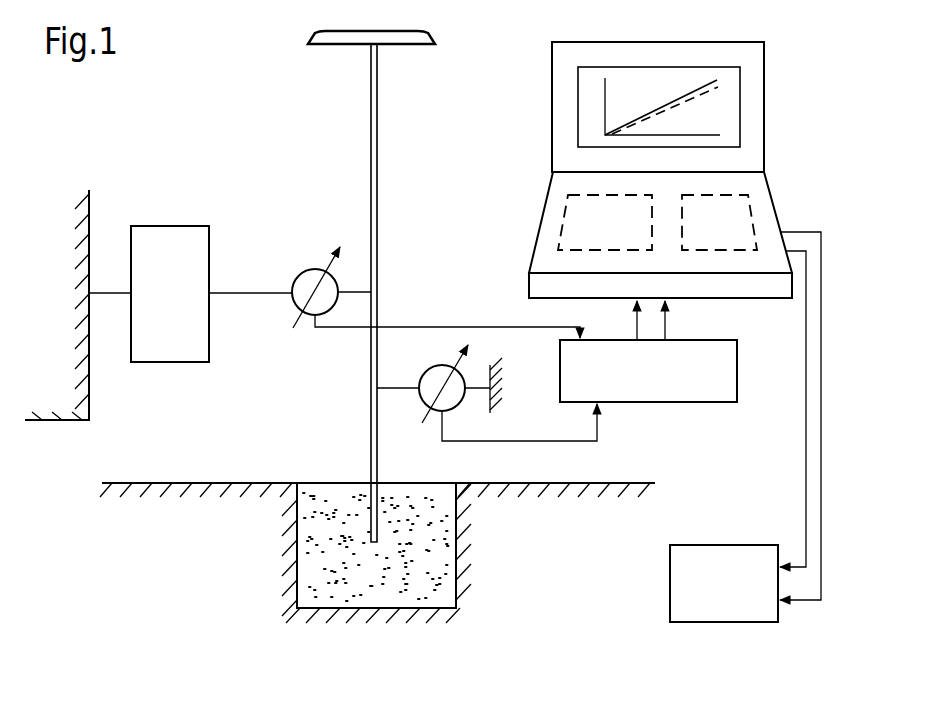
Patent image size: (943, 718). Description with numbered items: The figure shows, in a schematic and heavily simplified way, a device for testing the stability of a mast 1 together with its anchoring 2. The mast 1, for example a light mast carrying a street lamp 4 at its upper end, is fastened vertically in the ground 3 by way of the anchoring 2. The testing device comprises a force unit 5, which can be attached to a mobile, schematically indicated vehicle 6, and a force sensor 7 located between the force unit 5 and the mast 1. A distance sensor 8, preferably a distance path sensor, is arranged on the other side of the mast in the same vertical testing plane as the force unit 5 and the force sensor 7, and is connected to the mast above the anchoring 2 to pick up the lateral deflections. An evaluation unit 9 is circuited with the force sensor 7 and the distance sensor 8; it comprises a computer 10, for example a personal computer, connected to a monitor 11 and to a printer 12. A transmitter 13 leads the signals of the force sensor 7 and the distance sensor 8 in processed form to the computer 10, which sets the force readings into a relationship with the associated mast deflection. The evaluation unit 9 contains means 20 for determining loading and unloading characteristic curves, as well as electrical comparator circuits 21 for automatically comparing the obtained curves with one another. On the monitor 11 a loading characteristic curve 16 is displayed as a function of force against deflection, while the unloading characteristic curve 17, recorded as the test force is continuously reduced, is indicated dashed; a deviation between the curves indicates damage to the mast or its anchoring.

The mast 1 is at (378, 170).
The anchoring 2 is at (437, 575).
The ground 3 is at (198, 544).
The street lamp 4 is at (318, 44).
The force unit 5 is at (170, 237).
The vehicle 6 is at (89, 385).
The force sensor 7 is at (303, 272).
The distance sensor 8 is at (425, 374).
The evaluation unit 9 is at (530, 142).
The computer 10 is at (786, 290).
The monitor 11 is at (755, 87).
The printer 12 is at (725, 612).
The transmitter 13 is at (687, 386).
The loading characteristic curve 16 is at (672, 100).
The unloading characteristic curve 17 is at (678, 114).
The means for determining loading and unloading characteristic curves 20 is at (565, 222).
The electrical comparator circuits 21 is at (742, 213).